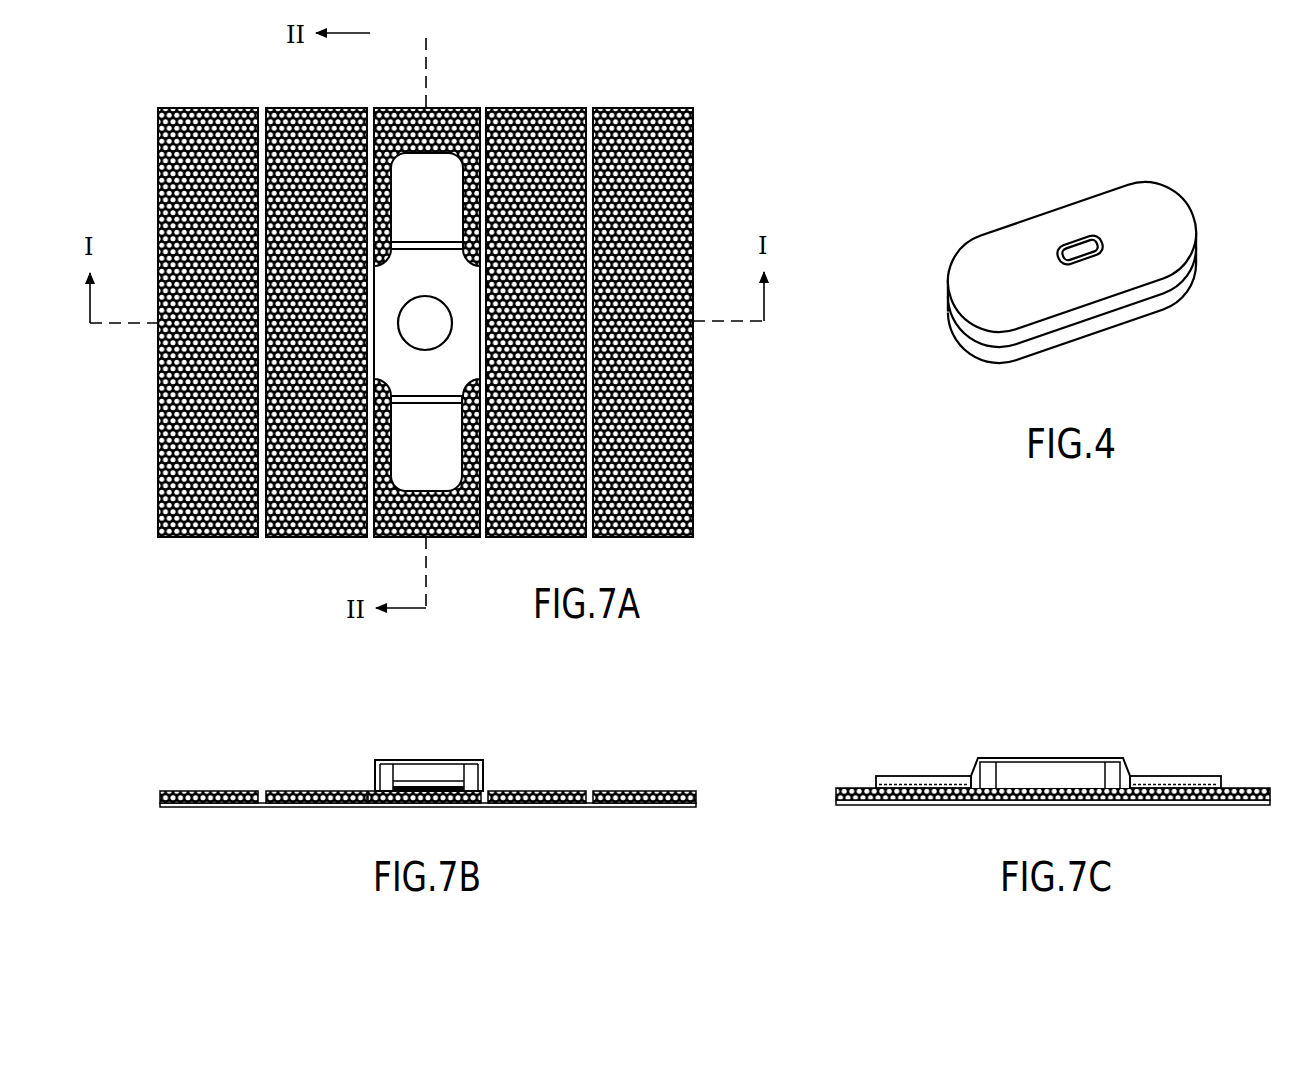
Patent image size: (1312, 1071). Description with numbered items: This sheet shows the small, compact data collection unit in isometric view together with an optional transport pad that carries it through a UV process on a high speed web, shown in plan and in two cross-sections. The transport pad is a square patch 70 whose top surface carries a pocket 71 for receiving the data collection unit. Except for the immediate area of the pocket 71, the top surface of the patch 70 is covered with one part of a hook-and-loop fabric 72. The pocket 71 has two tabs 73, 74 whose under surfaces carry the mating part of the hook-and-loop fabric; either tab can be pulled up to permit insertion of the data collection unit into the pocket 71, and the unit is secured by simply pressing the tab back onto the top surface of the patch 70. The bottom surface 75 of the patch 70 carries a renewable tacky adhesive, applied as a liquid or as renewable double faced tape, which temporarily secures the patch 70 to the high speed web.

In FIG. 7A, the square patch 70 is at (700, 151).
In FIG. 7A, the pocket 71 is at (431, 284).
In FIG. 7B, the pocket 71 is at (367, 752).
In FIG. 7C, the pocket 71 is at (1083, 750).
In FIG. 7A, the hook-and-loop fabric 72 is at (685, 412).
In FIG. 7B, the hook-and-loop fabric 72 is at (612, 783).
In FIG. 7C, the hook-and-loop fabric 72 is at (1235, 780).
In FIG. 7A, the tab 73 is at (432, 449).
In FIG. 7C, the tab 73 is at (905, 768).
In FIG. 7A, the tab 74 is at (432, 209).
In FIG. 7C, the tab 74 is at (1157, 768).
In FIG. 7B, the bottom surface 75 is at (540, 799).
In FIG. 7C, the bottom surface 75 is at (925, 797).